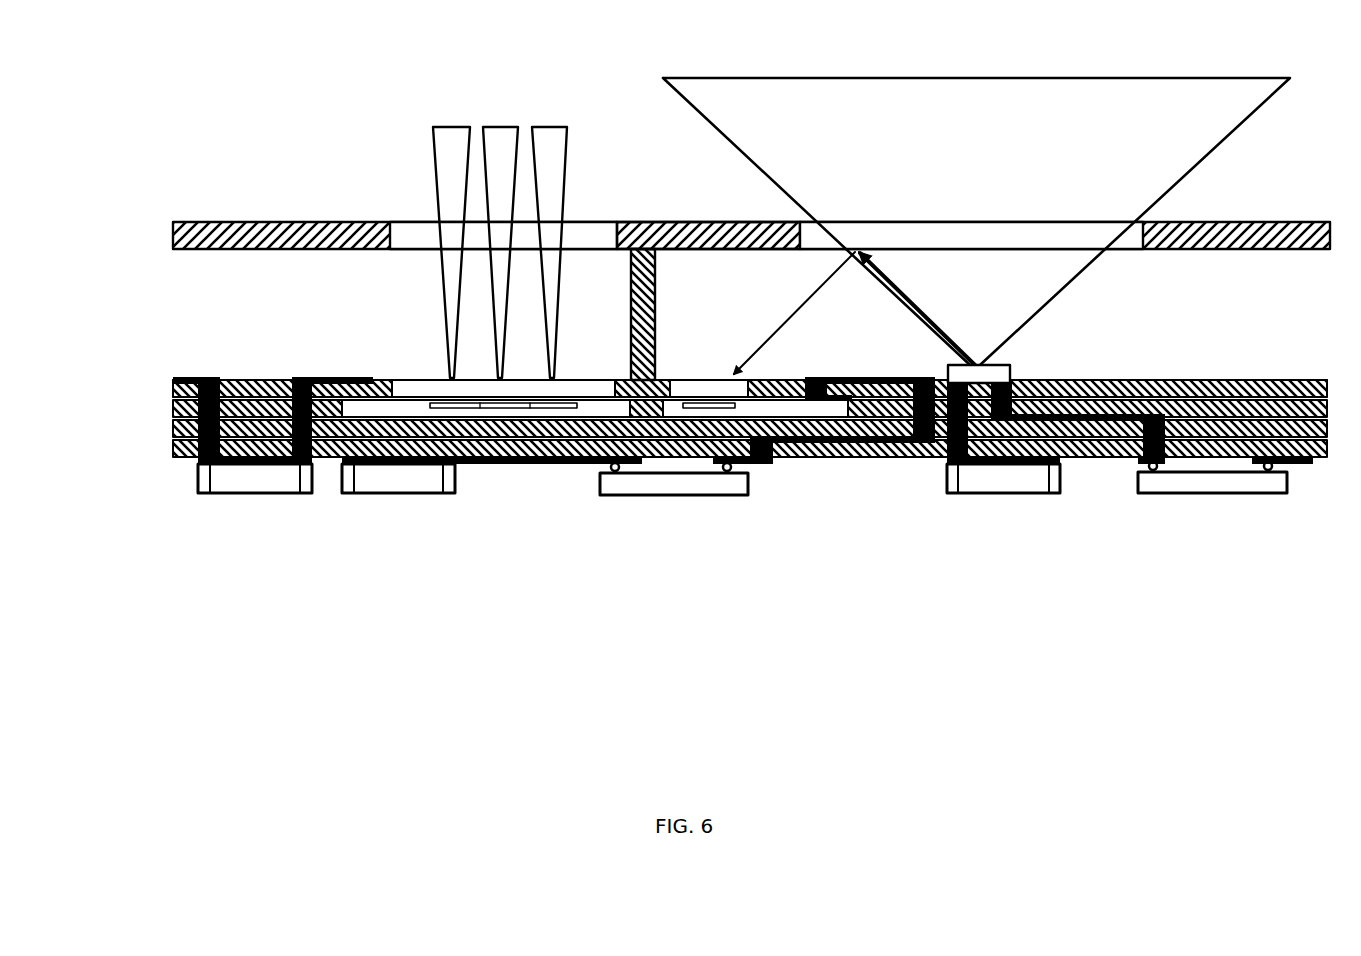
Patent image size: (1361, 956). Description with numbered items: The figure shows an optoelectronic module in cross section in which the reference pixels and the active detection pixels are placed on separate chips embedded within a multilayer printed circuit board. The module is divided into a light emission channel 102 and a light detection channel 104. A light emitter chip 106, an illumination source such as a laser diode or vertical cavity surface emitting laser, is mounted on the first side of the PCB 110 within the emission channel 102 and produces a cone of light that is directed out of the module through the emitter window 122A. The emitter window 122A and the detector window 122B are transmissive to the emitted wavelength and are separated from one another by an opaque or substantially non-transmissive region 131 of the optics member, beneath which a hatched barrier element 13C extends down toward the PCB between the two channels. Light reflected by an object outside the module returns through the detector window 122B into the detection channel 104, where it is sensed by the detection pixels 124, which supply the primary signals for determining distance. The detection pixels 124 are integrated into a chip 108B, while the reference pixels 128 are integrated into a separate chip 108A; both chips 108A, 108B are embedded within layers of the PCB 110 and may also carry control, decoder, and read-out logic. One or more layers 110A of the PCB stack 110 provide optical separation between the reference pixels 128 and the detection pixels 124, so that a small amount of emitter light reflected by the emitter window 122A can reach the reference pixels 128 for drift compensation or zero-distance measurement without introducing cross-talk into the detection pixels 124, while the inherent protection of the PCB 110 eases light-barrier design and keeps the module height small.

The light emission channel 102 is at (990, 309).
The light detection channel 104 is at (545, 371).
The light emitter chip 106 is at (1003, 372).
The chip 108A is at (763, 410).
The chip 108B is at (592, 410).
The printed circuit board 110 is at (715, 416).
The layers of the PCB stack 110A is at (628, 377).
The emitter window 122A is at (993, 233).
The detector window 122B is at (418, 237).
The detection pixels 124 is at (443, 398).
The reference pixels 128 is at (700, 400).
The non-transmissive region 131 is at (698, 223).
The spacer wall 13C is at (656, 332).